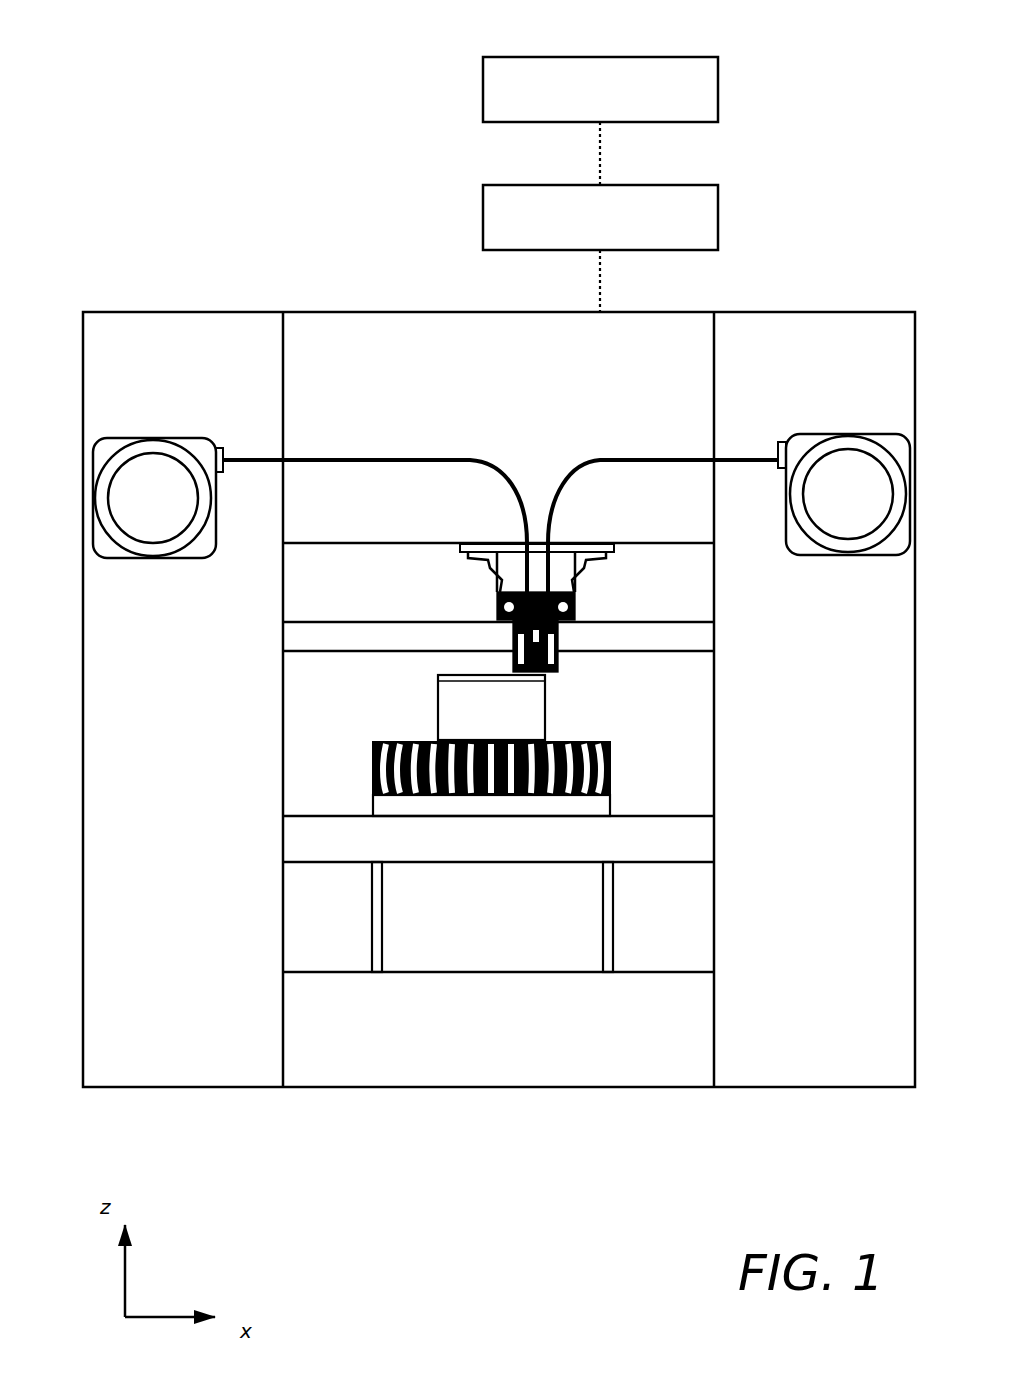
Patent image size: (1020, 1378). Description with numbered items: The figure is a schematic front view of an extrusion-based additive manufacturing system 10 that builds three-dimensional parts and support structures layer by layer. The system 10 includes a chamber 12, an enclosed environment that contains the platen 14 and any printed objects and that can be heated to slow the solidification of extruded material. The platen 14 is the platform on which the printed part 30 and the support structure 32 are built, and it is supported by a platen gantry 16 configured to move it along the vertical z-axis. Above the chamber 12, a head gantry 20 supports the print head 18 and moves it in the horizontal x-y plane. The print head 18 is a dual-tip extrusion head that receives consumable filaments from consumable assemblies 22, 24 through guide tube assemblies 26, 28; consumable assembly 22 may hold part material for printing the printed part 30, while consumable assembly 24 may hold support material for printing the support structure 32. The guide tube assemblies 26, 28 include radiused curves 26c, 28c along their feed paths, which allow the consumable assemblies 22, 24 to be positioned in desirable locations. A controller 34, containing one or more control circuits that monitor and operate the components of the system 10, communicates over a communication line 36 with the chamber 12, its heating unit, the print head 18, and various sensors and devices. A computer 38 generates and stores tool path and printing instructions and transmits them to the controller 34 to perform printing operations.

The additive manufacturing system 10 is at (203, 80).
The chamber 12 is at (285, 760).
The platen 14 is at (706, 853).
The platen gantry 16 is at (628, 955).
The print head 18 is at (605, 603).
The head gantry 20 is at (353, 621).
The consumable assembly 22 is at (143, 438).
The consumable assembly 24 is at (810, 434).
The guide tube assembly 26 is at (300, 460).
The radiused curve 26c is at (503, 460).
The guide tube assembly 28 is at (722, 460).
The radiused curve 28c is at (590, 460).
The printed part 30 is at (405, 741).
The support structure 32 is at (600, 802).
The controller 34 is at (718, 205).
The communication line 36 is at (600, 285).
The computer 38 is at (718, 70).